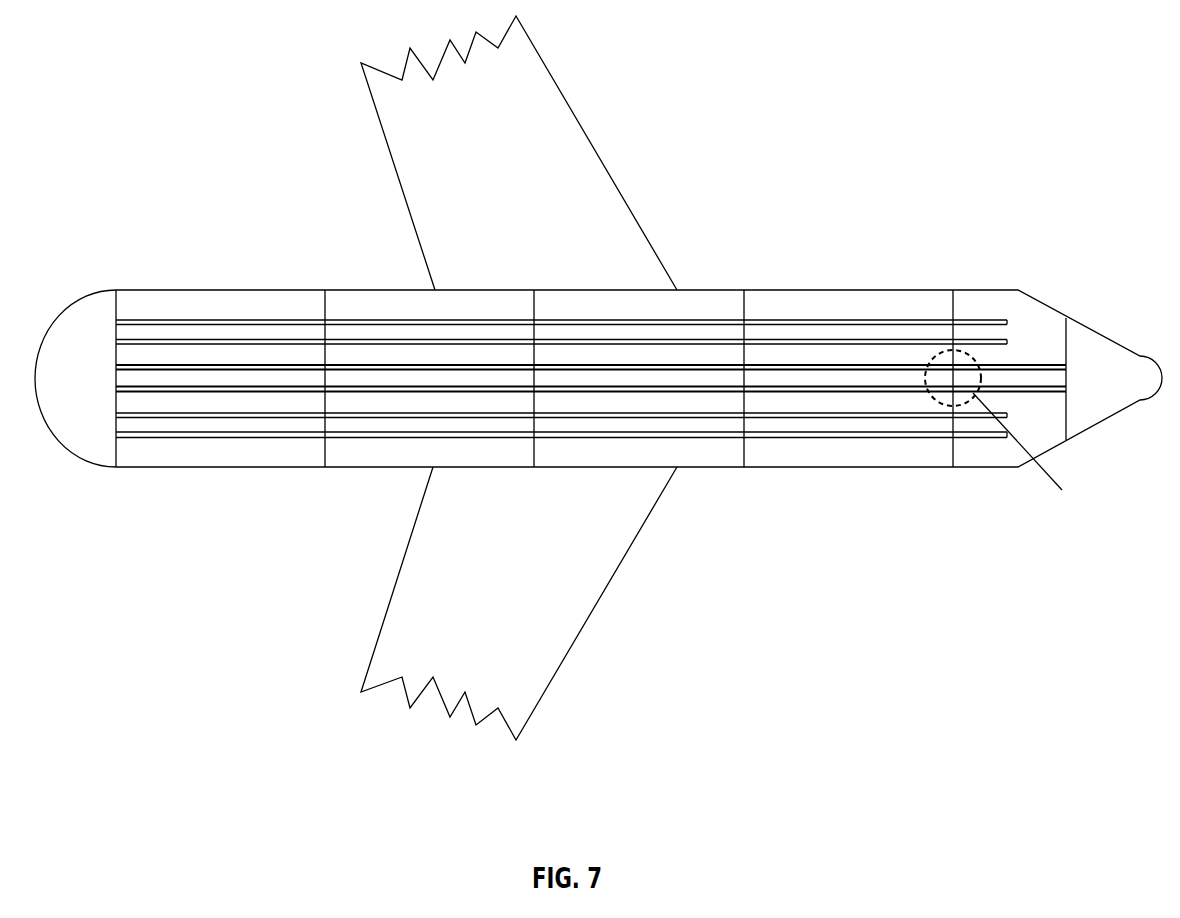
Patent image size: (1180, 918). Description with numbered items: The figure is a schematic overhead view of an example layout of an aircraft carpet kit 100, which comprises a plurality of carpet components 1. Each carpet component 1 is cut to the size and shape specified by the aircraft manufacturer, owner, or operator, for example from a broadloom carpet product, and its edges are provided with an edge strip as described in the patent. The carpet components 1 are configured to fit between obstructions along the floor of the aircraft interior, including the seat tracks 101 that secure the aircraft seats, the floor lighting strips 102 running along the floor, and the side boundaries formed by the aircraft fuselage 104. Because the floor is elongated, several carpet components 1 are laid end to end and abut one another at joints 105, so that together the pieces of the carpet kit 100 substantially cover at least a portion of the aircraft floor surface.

The carpet component 1 is at (212, 572).
The aircraft carpet kit 100 is at (599, 378).
The seat track 101 is at (482, 378).
The floor lighting strip 102 is at (670, 385).
The aircraft fuselage 104 is at (869, 468).
The joint 105 is at (745, 452).